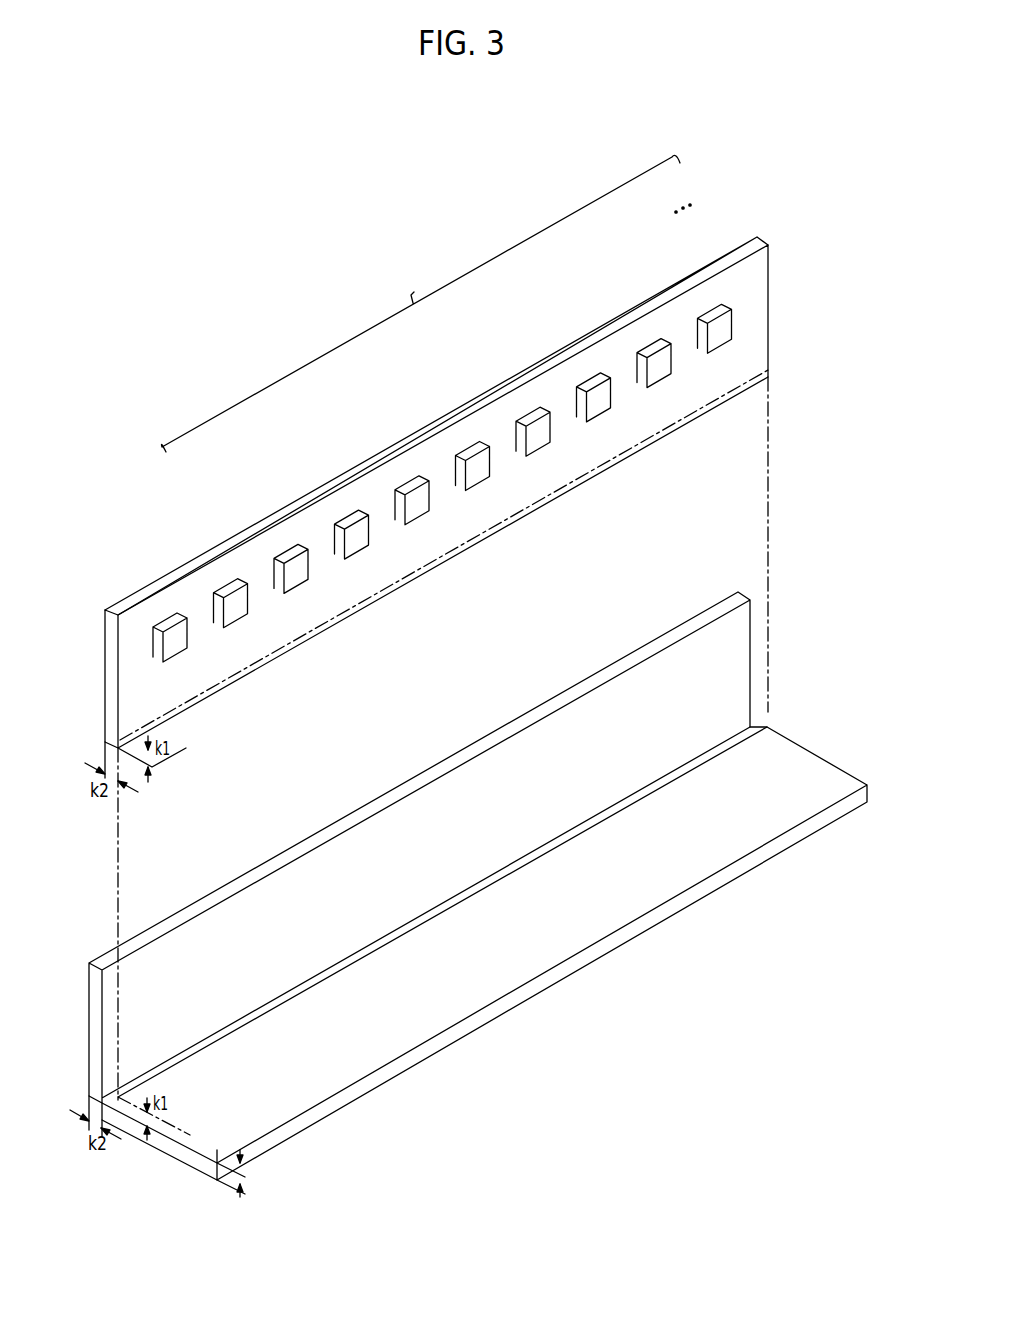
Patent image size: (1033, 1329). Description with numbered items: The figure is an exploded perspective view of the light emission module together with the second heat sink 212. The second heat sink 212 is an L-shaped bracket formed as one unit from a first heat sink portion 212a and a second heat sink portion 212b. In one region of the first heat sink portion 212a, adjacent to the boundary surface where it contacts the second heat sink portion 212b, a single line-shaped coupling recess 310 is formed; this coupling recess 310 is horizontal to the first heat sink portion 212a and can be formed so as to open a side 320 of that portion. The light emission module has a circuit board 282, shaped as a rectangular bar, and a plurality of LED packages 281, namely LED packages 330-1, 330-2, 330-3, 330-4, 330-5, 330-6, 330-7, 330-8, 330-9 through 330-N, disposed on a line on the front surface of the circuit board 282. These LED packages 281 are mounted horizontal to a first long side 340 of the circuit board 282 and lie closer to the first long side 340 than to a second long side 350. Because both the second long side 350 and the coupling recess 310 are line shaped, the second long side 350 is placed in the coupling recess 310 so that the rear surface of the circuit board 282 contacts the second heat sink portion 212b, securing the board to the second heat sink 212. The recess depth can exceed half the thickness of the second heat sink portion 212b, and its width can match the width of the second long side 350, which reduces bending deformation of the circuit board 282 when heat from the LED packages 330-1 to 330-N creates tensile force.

The LED packages 281 is at (421, 303).
The circuit board 282 is at (112, 677).
The first long side 340 is at (155, 587).
The second long side 350 is at (242, 679).
The LED package 330-1 is at (178, 639).
The LED package 330-2 is at (238, 605).
The LED package 330-3 is at (299, 570).
The LED package 330-4 is at (360, 536).
The LED package 330-5 is at (420, 502).
The LED package 330-6 is at (480, 468).
The LED package 330-7 is at (541, 433).
The LED package 330-8 is at (602, 399).
The LED package 330-9 is at (662, 365).
The LED package 330-N is at (722, 330).
The second heat sink 212 is at (478, 886).
The first heat sink portion 212a is at (383, 1040).
The second heat sink portion 212b is at (168, 967).
The coupling recess 310 is at (110, 1092).
The side of the first heat sink portion 320 is at (203, 1157).